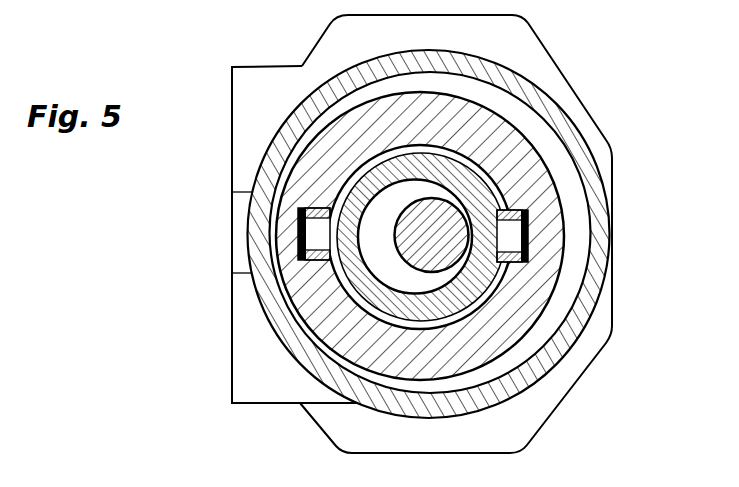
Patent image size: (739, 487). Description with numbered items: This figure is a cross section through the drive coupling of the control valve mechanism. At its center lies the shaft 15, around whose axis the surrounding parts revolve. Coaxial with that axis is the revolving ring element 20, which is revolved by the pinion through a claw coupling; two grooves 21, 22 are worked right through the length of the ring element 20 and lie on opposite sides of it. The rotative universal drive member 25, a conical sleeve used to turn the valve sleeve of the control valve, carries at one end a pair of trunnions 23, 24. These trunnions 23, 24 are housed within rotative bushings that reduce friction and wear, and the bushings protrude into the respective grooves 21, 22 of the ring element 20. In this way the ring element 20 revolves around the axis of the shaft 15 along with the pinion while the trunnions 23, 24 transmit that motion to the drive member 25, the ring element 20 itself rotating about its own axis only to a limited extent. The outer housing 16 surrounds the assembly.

The shaft 15 is at (345, 290).
The outer ring 16 is at (293, 127).
The revolving ring element 20 is at (315, 183).
The groove 21 is at (298, 238).
The groove 22 is at (527, 245).
The trunnion 23 is at (412, 238).
The trunnion 24 is at (513, 225).
The rotative universal drive member 25 is at (298, 229).